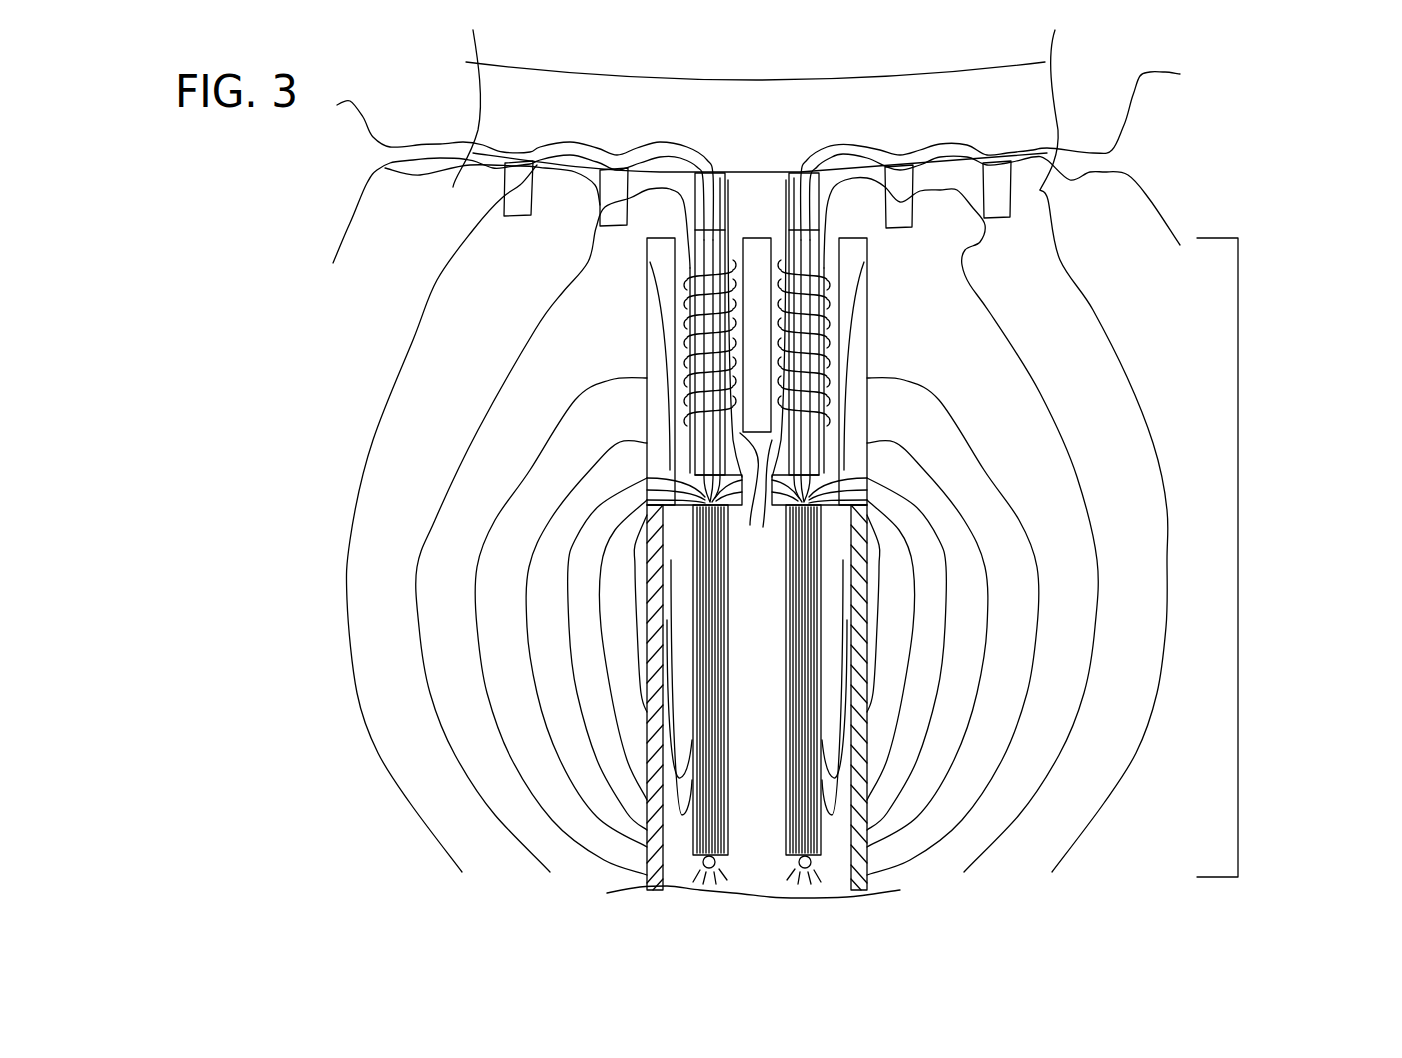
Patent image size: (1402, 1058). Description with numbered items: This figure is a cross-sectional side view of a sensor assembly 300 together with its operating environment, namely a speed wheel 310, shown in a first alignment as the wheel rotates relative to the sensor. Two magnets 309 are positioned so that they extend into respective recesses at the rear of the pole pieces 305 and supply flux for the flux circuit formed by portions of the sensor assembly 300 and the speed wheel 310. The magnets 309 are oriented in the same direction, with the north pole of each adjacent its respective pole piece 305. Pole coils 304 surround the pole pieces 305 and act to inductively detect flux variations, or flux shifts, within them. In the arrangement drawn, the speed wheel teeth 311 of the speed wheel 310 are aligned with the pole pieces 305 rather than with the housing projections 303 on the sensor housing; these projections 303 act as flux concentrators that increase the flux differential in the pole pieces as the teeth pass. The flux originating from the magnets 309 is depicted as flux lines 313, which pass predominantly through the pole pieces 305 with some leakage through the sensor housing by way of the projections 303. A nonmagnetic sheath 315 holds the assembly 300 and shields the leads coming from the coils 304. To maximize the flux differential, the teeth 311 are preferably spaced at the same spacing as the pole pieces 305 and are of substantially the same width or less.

The sensor assembly 300 is at (1238, 553).
The housing projections 303 is at (757, 255).
The pole coils 304 is at (686, 263).
The pole pieces 305 is at (690, 347).
The magnets 309 is at (693, 577).
The speed wheel 310 is at (858, 118).
The speed wheel teeth 311 is at (1012, 220).
The flux lines 313 is at (865, 718).
The nonmagnetic sheath 315 is at (862, 884).